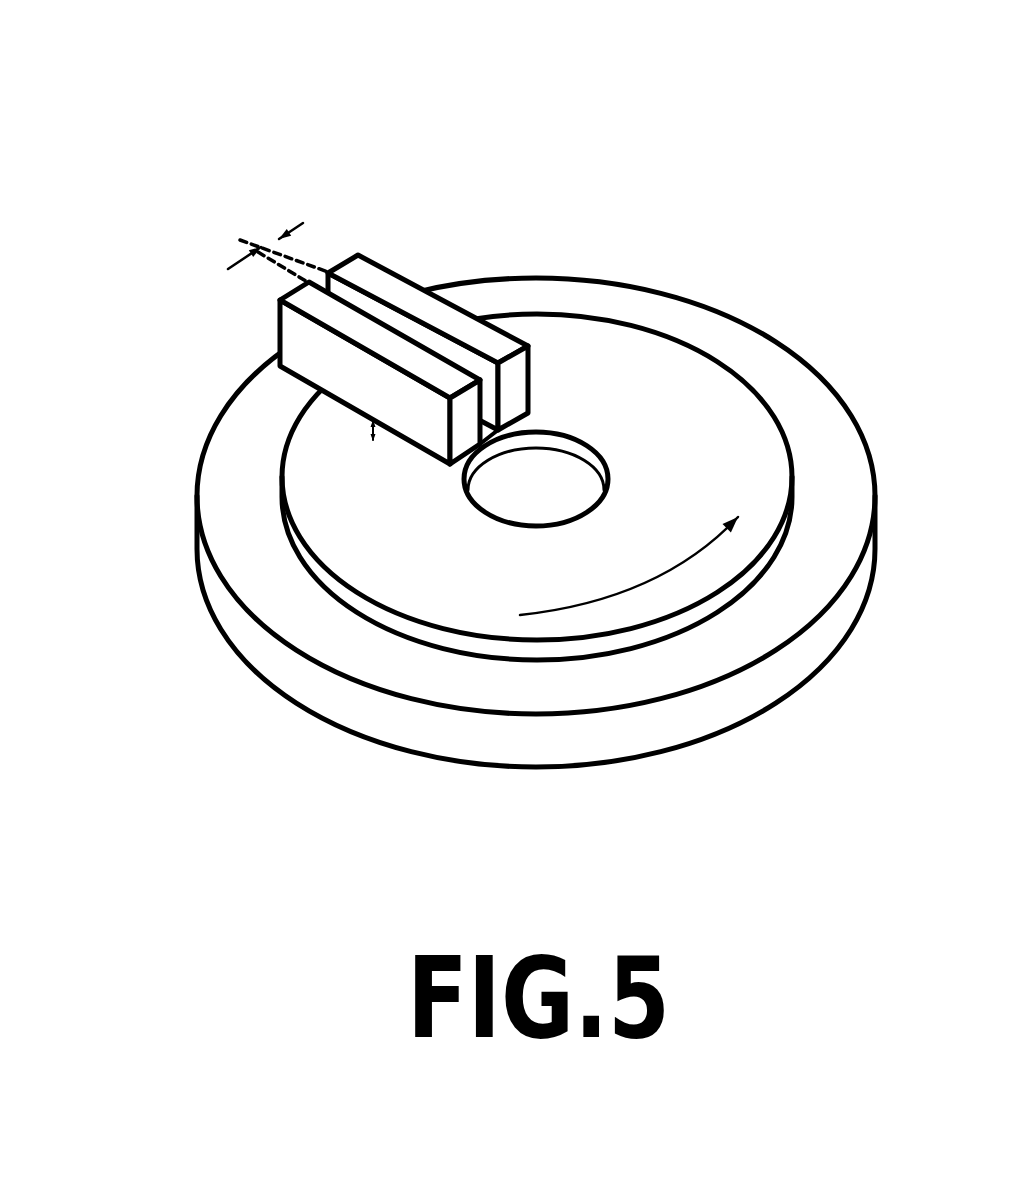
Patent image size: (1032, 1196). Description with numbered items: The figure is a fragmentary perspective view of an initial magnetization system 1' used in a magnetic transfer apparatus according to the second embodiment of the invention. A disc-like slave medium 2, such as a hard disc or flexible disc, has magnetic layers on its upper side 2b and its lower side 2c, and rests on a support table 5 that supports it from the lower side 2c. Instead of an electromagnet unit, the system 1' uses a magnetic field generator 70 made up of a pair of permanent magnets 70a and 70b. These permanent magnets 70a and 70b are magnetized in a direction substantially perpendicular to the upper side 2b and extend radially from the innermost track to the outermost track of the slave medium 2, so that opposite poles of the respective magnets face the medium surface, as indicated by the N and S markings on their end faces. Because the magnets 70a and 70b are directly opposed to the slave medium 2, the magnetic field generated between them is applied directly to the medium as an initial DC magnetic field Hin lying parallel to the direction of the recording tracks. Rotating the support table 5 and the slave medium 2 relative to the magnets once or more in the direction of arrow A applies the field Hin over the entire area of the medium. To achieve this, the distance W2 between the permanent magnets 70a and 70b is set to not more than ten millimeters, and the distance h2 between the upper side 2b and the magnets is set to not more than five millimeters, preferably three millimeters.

The initial magnetization system 1' is at (485, 383).
The slave medium 2 is at (467, 500).
The upper side of slave medium 2b is at (315, 515).
The lower side of slave medium 2c is at (377, 630).
The support table 5 is at (835, 455).
The magnetic field generator 70 is at (333, 325).
The permanent magnet 70a is at (296, 340).
The permanent magnet 70b is at (385, 278).
The distance between permanent magnets W2 is at (256, 246).
The distance between slave medium and permanent magnets h2 is at (373, 441).
The initial DC magnetic field Hin is at (495, 440).
The direction of rotation A is at (693, 565).